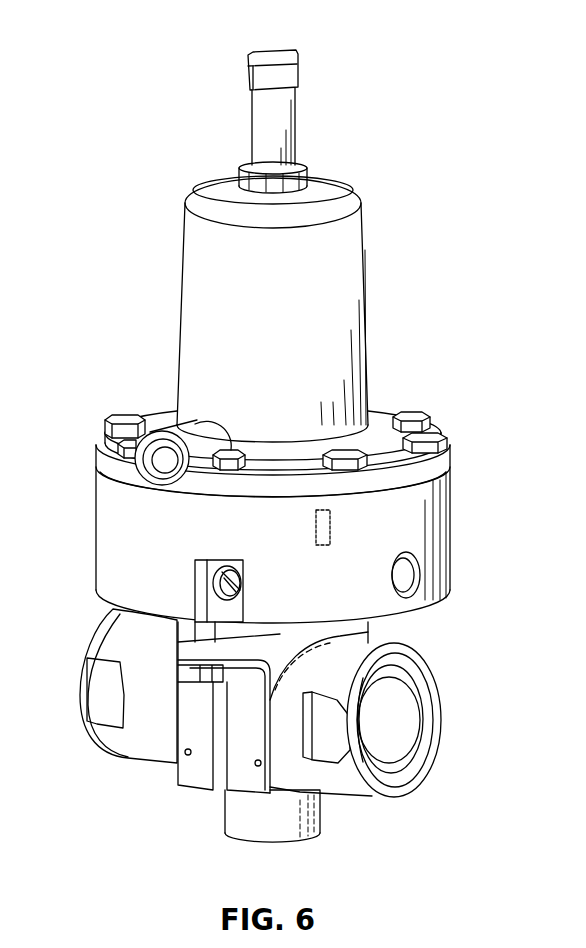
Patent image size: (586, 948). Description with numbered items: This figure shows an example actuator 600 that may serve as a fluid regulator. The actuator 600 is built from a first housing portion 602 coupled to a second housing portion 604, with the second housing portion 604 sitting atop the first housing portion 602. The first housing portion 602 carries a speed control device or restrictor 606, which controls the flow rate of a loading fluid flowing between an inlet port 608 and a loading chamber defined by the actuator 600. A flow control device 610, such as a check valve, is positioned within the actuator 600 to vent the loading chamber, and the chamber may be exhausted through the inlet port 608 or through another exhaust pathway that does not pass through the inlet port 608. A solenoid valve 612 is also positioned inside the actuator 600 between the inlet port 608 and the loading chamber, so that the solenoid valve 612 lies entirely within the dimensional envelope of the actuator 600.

The actuator 600 is at (130, 52).
The first housing portion 602 is at (450, 490).
The second housing portion 604 is at (365, 322).
The speed control device or restrictor 606 is at (213, 593).
The inlet port 608 is at (412, 575).
The flow control device 610 is at (330, 528).
The solenoid valve 612 is at (420, 585).